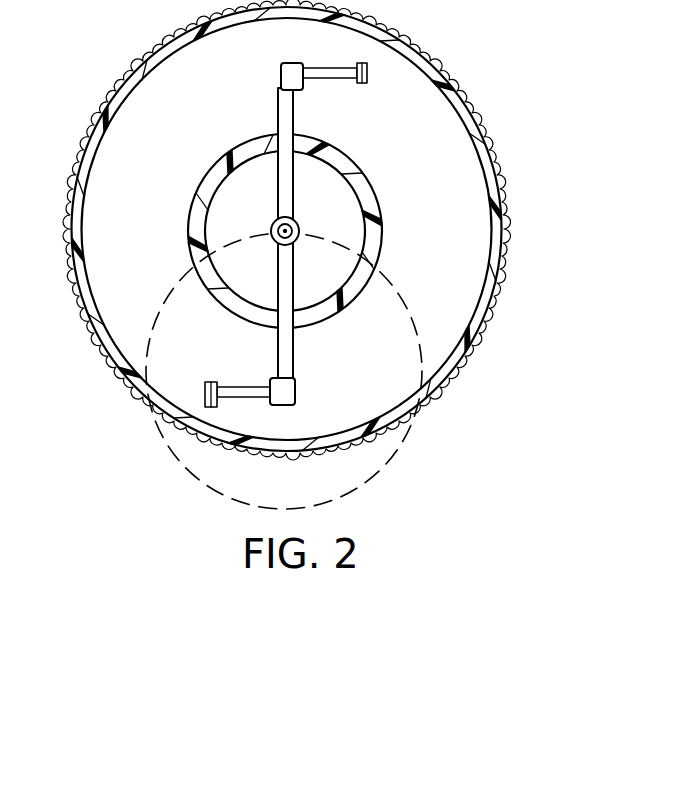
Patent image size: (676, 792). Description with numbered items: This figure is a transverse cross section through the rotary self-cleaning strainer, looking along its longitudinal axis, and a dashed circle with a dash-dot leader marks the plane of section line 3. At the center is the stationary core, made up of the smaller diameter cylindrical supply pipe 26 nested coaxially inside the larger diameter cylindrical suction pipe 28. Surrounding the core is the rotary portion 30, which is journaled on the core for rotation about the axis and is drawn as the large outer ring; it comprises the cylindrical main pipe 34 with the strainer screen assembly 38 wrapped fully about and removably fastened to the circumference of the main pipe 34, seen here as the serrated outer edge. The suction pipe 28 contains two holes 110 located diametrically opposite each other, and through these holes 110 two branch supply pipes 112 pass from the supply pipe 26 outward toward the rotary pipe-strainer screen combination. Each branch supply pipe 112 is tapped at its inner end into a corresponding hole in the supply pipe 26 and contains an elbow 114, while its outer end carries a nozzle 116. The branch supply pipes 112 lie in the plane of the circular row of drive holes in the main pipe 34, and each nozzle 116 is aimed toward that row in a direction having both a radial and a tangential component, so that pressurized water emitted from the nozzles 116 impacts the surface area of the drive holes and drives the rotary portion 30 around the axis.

The section line 3- 3 is at (400, 448).
The supply pipe 26 is at (293, 228).
The suction pipe 28 is at (373, 216).
The rotary portion 30 is at (316, 230).
The main pipe 34 is at (500, 226).
The strainer screen assembly 38 is at (113, 80).
The holes 110 is at (300, 134).
The branch supply pipe 112 is at (280, 175).
The elbow 114 is at (281, 73).
The nozzle 116 is at (368, 72).